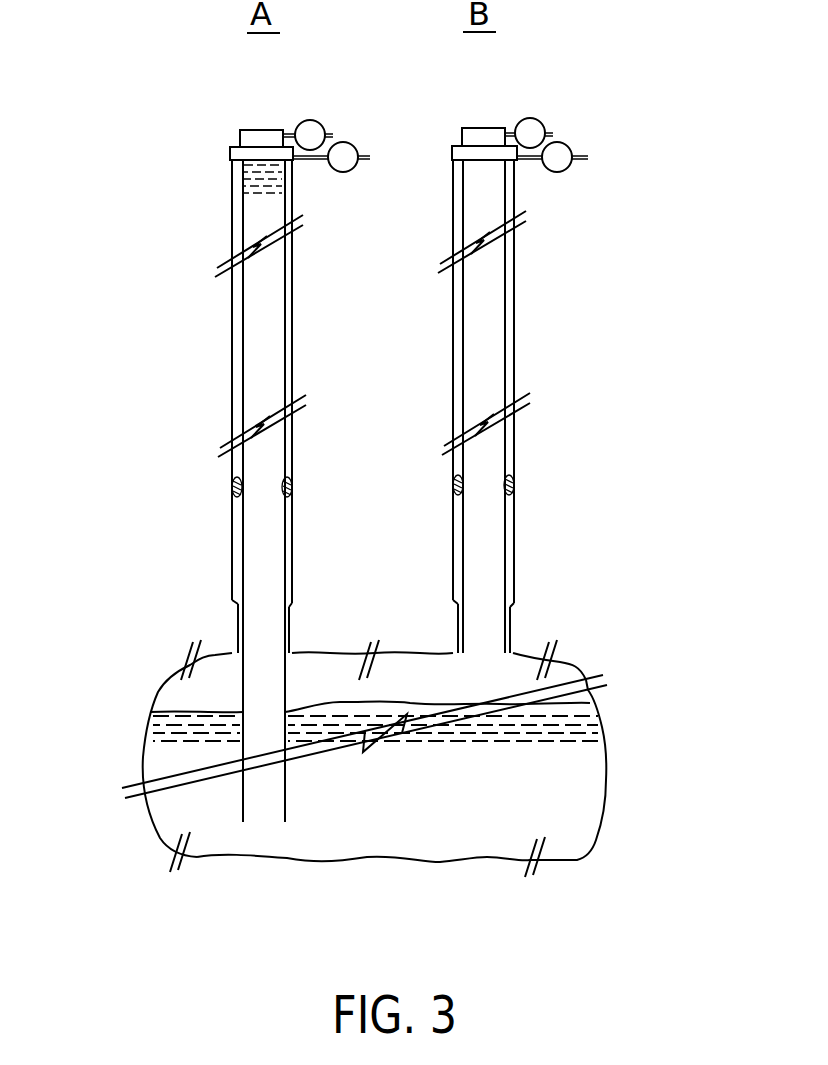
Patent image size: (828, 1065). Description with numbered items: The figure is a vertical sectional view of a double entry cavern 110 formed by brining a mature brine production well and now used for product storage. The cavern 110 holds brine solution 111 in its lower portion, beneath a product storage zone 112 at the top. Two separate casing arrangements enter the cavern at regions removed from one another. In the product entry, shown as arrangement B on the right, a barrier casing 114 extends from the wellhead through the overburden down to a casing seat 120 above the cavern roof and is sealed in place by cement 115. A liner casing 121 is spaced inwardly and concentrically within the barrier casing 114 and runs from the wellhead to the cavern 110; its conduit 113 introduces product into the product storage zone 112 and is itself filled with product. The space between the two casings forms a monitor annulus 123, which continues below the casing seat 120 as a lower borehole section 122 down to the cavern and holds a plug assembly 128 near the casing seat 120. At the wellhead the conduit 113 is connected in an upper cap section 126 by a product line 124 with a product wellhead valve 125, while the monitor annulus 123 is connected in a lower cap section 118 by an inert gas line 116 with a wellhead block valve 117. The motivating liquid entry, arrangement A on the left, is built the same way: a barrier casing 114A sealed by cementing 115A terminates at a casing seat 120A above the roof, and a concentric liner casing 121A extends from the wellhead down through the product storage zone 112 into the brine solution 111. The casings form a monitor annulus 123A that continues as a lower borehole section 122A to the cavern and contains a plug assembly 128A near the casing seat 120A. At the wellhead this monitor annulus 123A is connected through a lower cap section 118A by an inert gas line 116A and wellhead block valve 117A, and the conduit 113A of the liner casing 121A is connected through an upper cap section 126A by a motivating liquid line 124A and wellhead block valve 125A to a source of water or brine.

The cavern 110 is at (140, 755).
The brine solution 111 is at (592, 797).
The product storage zone 112 is at (567, 676).
The conduit 113 is at (478, 380).
The conduit 113A is at (257, 402).
The barrier casing 114 is at (508, 571).
The barrier casing 114A is at (287, 517).
The cement 115 is at (515, 543).
The cementing 115A is at (295, 542).
The inert gas line 116 is at (532, 160).
The inert gas line 116A is at (312, 160).
The wellhead block valve 117 is at (568, 167).
The wellhead block valve 117A is at (353, 167).
The lower cap section 118 is at (458, 152).
The lower cap section 118A is at (237, 152).
The casing seat 120 is at (452, 605).
The casing seat 120A is at (293, 603).
The liner casing 121 is at (508, 290).
The liner casing 121A is at (238, 315).
The lower borehole section 122 is at (510, 630).
The lower borehole section 122A is at (292, 633).
The monitor annulus 123 is at (456, 228).
The monitor annulus 123A is at (286, 273).
The product line 124 is at (512, 135).
The motivating liquid line 124A is at (288, 134).
The product wellhead valve 125 is at (545, 132).
The wellhead block valve 125A is at (300, 124).
The upper cap section 126 is at (467, 138).
The upper cap section 126A is at (255, 136).
The plug assembly 128 is at (515, 483).
The plug assembly 128A is at (230, 495).